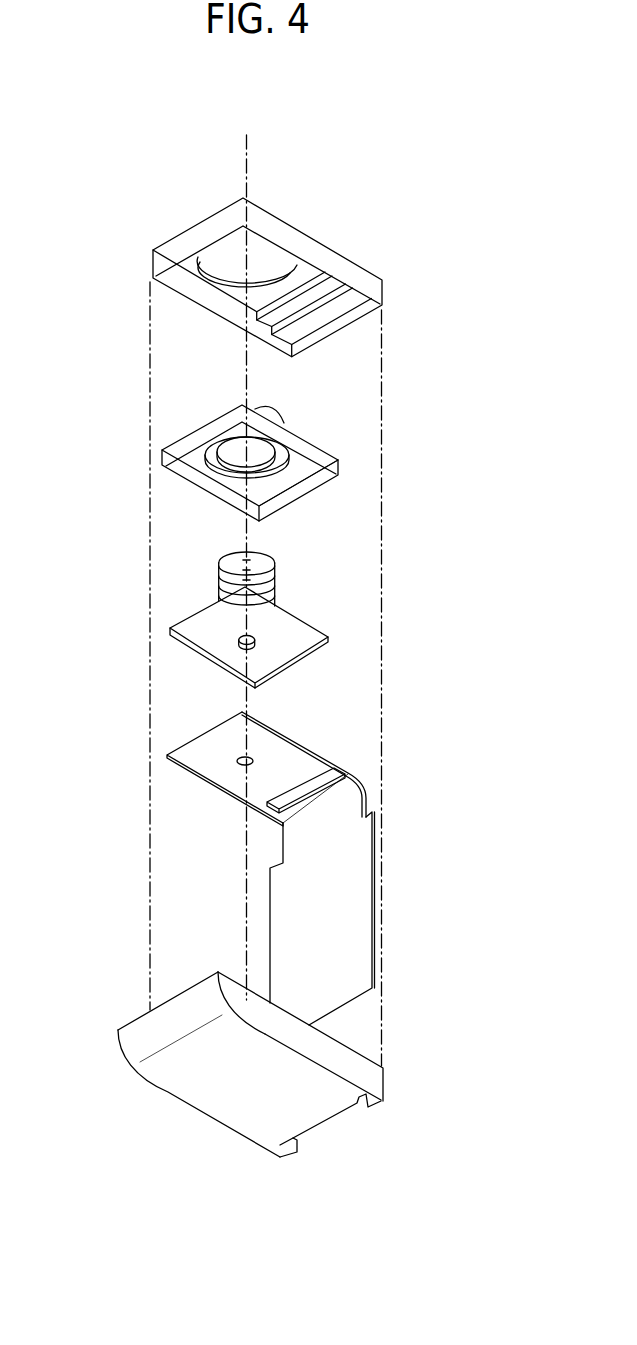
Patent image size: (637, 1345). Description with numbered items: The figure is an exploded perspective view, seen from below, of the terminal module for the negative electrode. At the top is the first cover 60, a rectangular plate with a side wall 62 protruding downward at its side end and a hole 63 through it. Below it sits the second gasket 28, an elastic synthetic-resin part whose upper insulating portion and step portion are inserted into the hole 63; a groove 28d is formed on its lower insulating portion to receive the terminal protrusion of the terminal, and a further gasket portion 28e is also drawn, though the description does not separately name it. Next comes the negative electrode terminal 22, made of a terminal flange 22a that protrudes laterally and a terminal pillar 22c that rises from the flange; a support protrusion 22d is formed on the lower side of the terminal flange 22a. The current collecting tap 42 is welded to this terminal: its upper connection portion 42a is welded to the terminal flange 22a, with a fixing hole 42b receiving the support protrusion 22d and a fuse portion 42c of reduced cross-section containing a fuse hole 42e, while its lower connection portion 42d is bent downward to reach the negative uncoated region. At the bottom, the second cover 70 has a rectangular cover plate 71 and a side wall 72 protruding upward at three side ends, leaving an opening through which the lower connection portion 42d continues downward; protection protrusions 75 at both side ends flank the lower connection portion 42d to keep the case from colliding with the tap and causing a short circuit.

The first cover 60 is at (284, 273).
The side wall 62 is at (267, 273).
The hole 63 is at (222, 282).
The second gasket 28 is at (263, 447).
The groove 28d is at (212, 468).
The frame flange 28e is at (291, 473).
The negative electrode terminal 22 is at (260, 619).
The terminal flange 22a is at (289, 644).
The terminal pillar 22c is at (218, 576).
The support protrusion 22d is at (236, 651).
The current collecting tap 42 is at (269, 851).
The upper connection portion 42a is at (267, 781).
The fixing hole 42b is at (241, 767).
The fuse portion 42c is at (338, 777).
The lower connection portion 42d is at (350, 875).
The fuse hole 42e is at (363, 798).
The second cover 70 is at (260, 1068).
The cover plate 71 is at (223, 1094).
The side wall 72 is at (320, 1048).
The protection protrusions 75 is at (382, 1082).